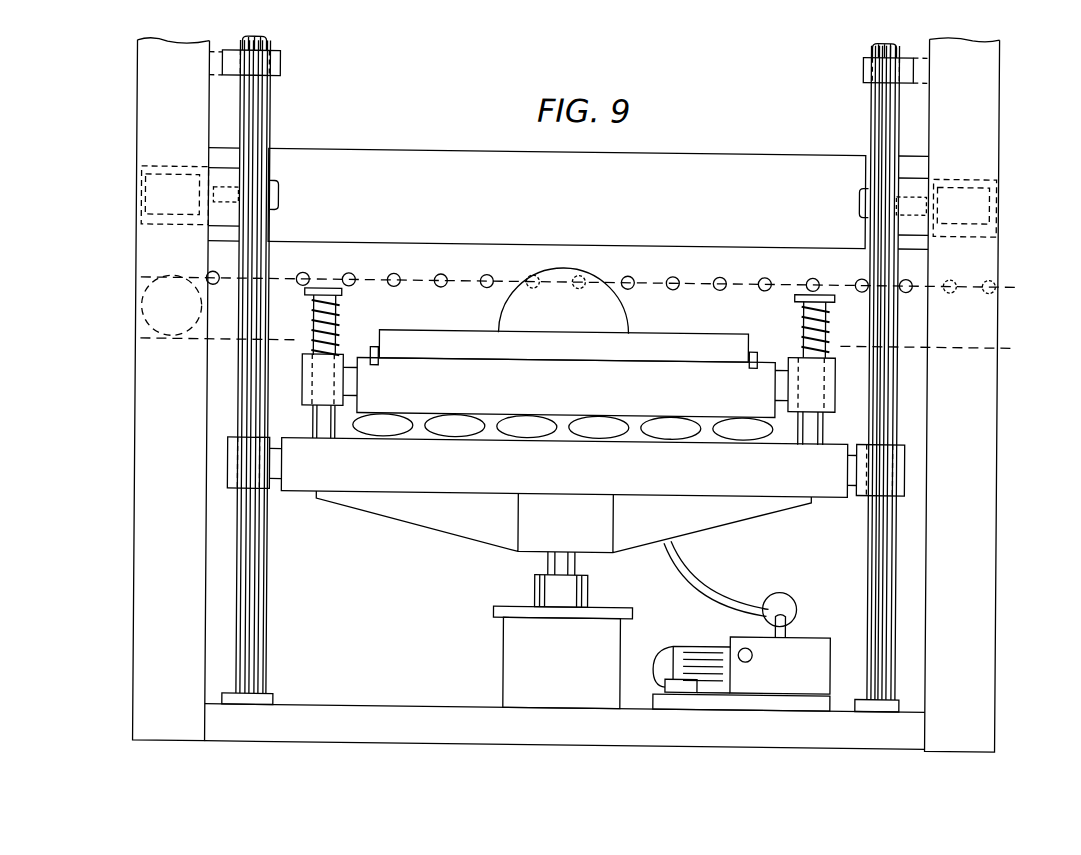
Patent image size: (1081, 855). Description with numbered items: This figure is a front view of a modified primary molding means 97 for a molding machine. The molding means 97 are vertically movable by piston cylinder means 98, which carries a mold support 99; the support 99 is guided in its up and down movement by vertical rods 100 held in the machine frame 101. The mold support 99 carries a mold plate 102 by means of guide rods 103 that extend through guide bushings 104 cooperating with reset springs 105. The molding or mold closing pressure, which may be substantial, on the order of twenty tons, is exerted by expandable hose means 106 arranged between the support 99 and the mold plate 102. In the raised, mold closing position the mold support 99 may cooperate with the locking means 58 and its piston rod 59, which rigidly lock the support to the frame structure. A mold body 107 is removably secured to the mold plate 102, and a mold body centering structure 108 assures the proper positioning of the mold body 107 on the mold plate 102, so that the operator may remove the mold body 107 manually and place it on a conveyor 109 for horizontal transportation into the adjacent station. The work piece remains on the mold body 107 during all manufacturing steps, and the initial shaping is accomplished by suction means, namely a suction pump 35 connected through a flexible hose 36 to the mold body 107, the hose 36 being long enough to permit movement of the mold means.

The suction pump 35 is at (822, 657).
The flexible hose 36 is at (702, 584).
The locking means 58 is at (140, 197).
The piston rod 59 is at (278, 190).
The molding means 97 is at (405, 547).
The piston cylinder means 98 is at (505, 655).
The mold support 99 is at (823, 492).
The vertical rods 100 is at (268, 100).
The machine frame 101 is at (150, 78).
The mold plate 102 is at (565, 392).
The guide rods 103 is at (320, 422).
The guide bushings 104 is at (318, 386).
The reset springs 105 is at (307, 320).
The expandable hose means 106 is at (452, 432).
The mold body 107 is at (663, 343).
The mold body centering structure 108 is at (377, 360).
The conveyor 109 is at (141, 300).